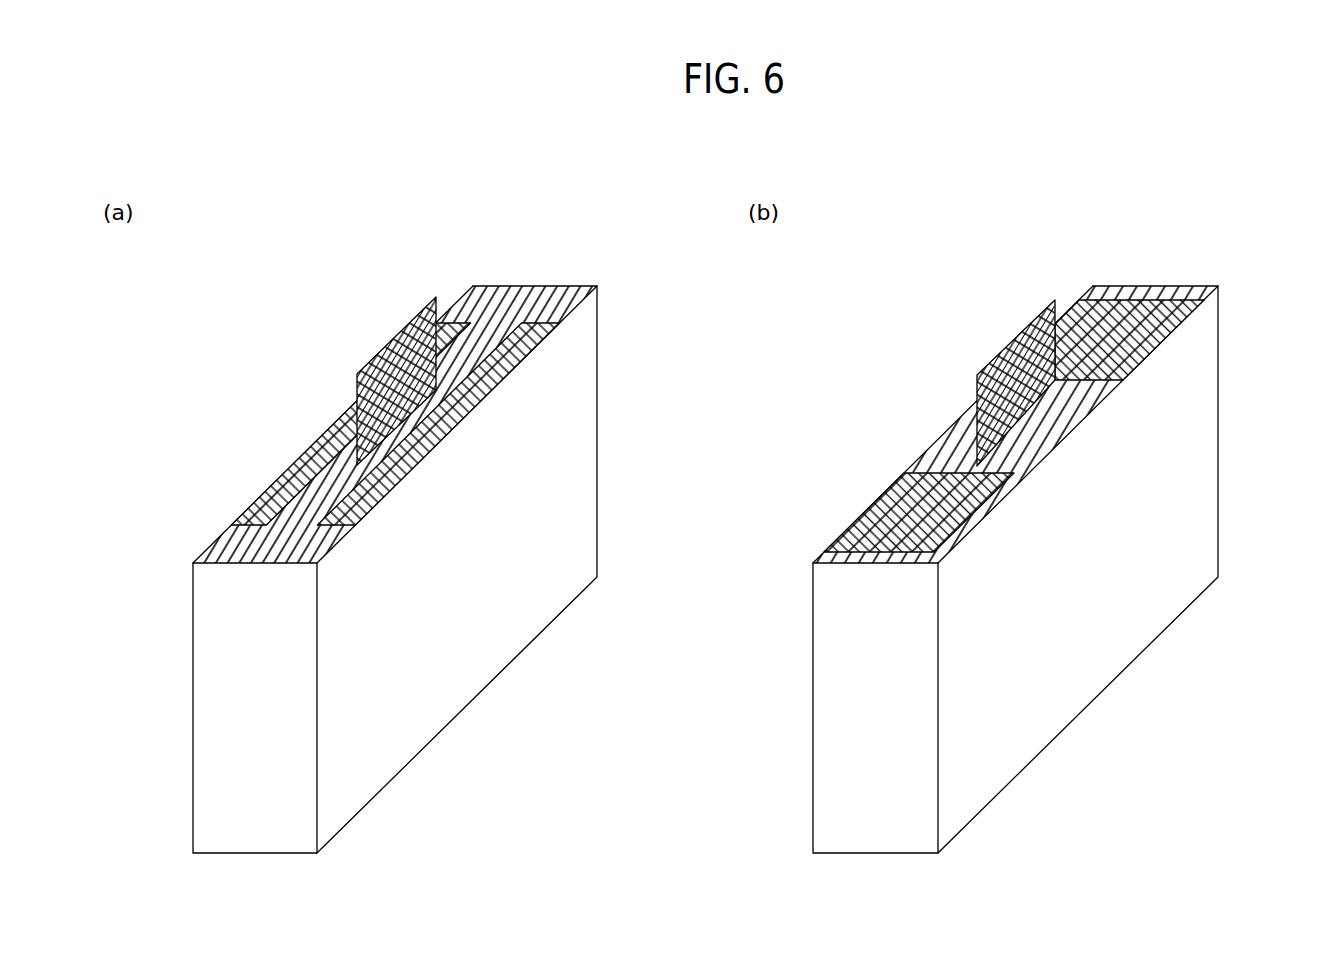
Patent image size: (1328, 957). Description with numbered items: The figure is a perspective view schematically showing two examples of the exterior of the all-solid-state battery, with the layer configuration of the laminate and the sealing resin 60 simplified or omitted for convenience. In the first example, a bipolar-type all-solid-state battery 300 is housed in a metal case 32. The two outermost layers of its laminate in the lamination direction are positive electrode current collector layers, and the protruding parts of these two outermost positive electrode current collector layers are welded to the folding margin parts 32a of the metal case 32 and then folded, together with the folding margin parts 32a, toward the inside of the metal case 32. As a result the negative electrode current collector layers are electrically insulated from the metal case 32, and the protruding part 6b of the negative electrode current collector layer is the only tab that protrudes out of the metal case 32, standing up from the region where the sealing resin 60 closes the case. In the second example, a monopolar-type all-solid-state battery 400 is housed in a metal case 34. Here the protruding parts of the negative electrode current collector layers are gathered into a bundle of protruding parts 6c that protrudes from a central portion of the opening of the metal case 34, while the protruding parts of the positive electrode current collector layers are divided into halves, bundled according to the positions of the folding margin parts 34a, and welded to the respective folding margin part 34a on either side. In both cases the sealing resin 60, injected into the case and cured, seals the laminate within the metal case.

The all-solid-state battery 300 is at (236, 340).
The all-solid-state battery 400 is at (843, 342).
The metal case 32 is at (598, 413).
The folding margin parts 32a is at (457, 312).
The metal case 34 is at (1218, 414).
The folding margin parts 34a is at (1090, 348).
The sealing resin 60 is at (507, 291).
The protruding part of the negative electrode current collector layer 6b is at (427, 308).
The protruding parts 6c is at (1020, 331).